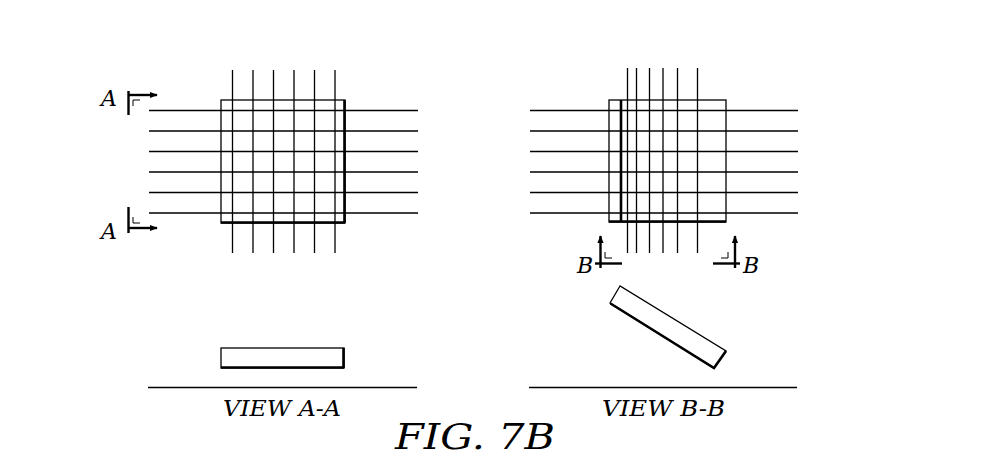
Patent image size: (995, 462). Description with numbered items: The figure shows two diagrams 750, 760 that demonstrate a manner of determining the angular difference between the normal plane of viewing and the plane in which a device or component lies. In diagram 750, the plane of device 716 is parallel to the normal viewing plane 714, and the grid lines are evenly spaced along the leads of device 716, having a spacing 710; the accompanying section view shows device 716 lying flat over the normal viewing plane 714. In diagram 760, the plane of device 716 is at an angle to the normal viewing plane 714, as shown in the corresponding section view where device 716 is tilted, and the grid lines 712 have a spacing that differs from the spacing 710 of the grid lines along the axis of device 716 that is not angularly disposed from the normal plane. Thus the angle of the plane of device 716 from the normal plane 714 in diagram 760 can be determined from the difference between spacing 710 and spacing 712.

The diagram 750 is at (166, 64).
The diagram 760 is at (783, 64).
The spacing 710 is at (202, 48).
The grid lines 712 is at (670, 48).
The device 716 is at (345, 100).
The normal viewing plane 714 is at (381, 387).